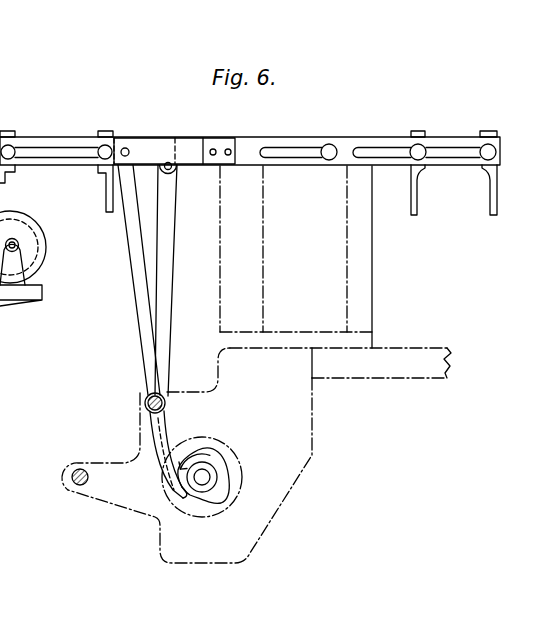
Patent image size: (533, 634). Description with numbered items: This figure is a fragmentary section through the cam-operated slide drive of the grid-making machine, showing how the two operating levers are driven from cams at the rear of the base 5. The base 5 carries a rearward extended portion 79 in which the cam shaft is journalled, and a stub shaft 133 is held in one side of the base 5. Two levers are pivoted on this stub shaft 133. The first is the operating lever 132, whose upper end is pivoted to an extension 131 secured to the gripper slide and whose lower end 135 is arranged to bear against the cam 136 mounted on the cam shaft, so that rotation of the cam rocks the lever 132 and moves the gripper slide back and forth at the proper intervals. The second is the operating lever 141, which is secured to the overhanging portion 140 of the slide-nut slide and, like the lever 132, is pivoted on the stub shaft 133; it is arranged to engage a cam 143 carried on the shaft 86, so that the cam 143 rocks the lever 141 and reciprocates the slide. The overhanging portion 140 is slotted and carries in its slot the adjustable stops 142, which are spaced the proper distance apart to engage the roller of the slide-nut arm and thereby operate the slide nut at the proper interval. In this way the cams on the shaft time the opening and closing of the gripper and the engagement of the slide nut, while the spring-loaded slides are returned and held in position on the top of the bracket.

The base 5 is at (370, 378).
The extended portion of the base 79 is at (275, 498).
The shaft 86 is at (203, 477).
The extension 131 is at (148, 147).
The operating lever 132 is at (134, 262).
The stub shaft 133 is at (145, 402).
The lower end of the operating lever 135 is at (175, 490).
The cam 136 is at (223, 502).
The overhanging portion of the slide 140 is at (50, 154).
The operating lever 141 is at (165, 231).
The adjustable stops 142 is at (0, 108).
The cam 143 is at (212, 448).